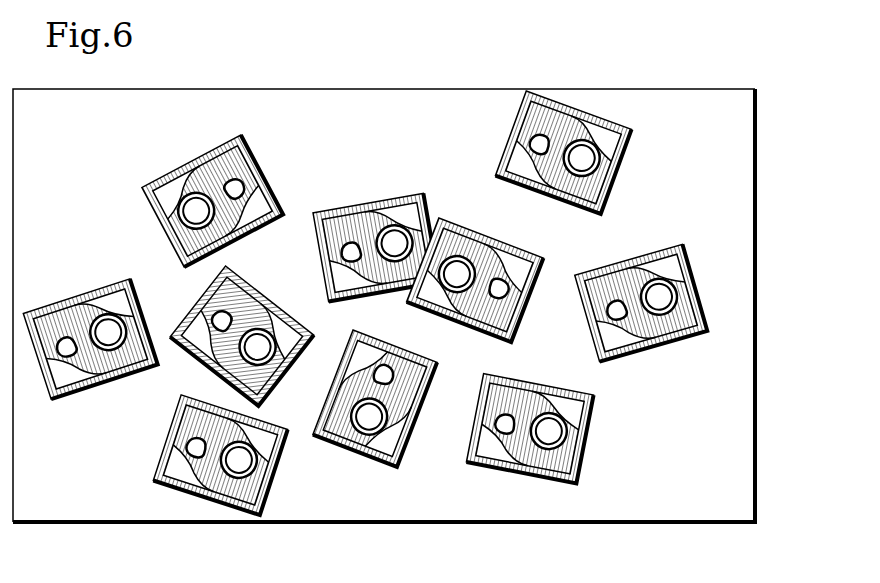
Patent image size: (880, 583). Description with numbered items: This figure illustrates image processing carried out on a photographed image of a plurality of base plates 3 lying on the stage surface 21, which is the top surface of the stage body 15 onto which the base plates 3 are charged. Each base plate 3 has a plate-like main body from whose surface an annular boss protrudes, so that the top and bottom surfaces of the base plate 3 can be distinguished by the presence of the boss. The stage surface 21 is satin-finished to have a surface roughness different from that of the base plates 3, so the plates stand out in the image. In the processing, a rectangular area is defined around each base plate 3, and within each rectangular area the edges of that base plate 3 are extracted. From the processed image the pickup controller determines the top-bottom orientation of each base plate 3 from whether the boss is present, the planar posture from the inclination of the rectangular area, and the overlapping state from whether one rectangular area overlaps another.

The base plate 3 is at (411, 303).
The stage body 15 is at (668, 89).
The stage surface 21 is at (724, 108).